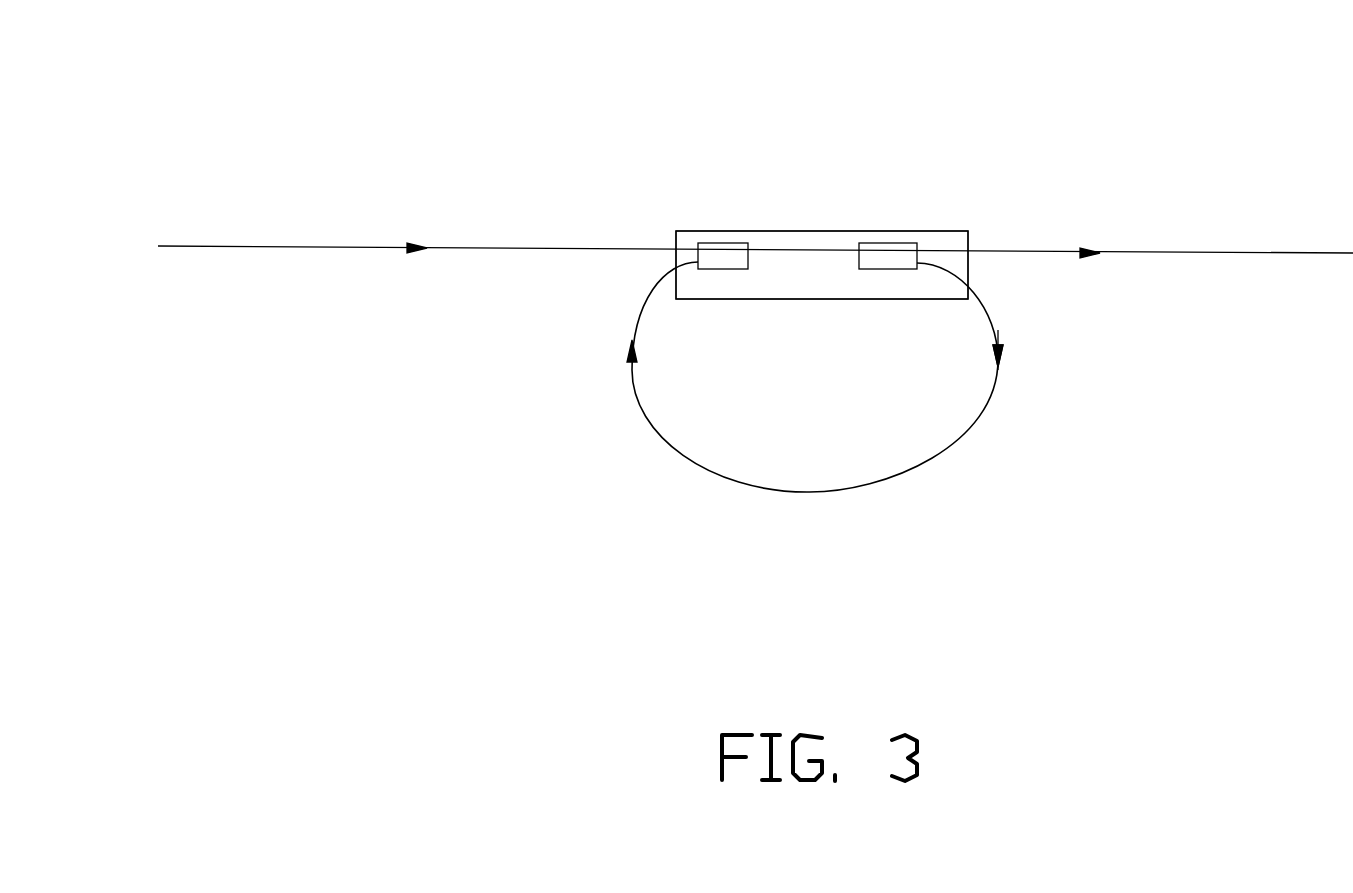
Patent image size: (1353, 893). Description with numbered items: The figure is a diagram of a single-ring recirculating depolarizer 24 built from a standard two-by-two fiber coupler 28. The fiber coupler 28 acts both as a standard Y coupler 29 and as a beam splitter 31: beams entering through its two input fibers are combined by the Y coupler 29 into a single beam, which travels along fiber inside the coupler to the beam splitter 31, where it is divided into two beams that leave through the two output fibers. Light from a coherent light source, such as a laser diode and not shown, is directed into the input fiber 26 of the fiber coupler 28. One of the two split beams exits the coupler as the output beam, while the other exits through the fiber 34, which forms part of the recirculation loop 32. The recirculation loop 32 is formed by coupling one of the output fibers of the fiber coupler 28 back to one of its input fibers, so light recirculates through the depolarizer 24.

The single-ring recirculating depolarizer 24 is at (816, 122).
The input fiber 26 is at (262, 230).
The 2×2 fiber coupler 28 is at (784, 222).
The standard Y coupler 29 is at (716, 232).
The beam splitter 31 is at (896, 232).
The recirculation loop 32 is at (779, 501).
The fiber 34 is at (1008, 379).